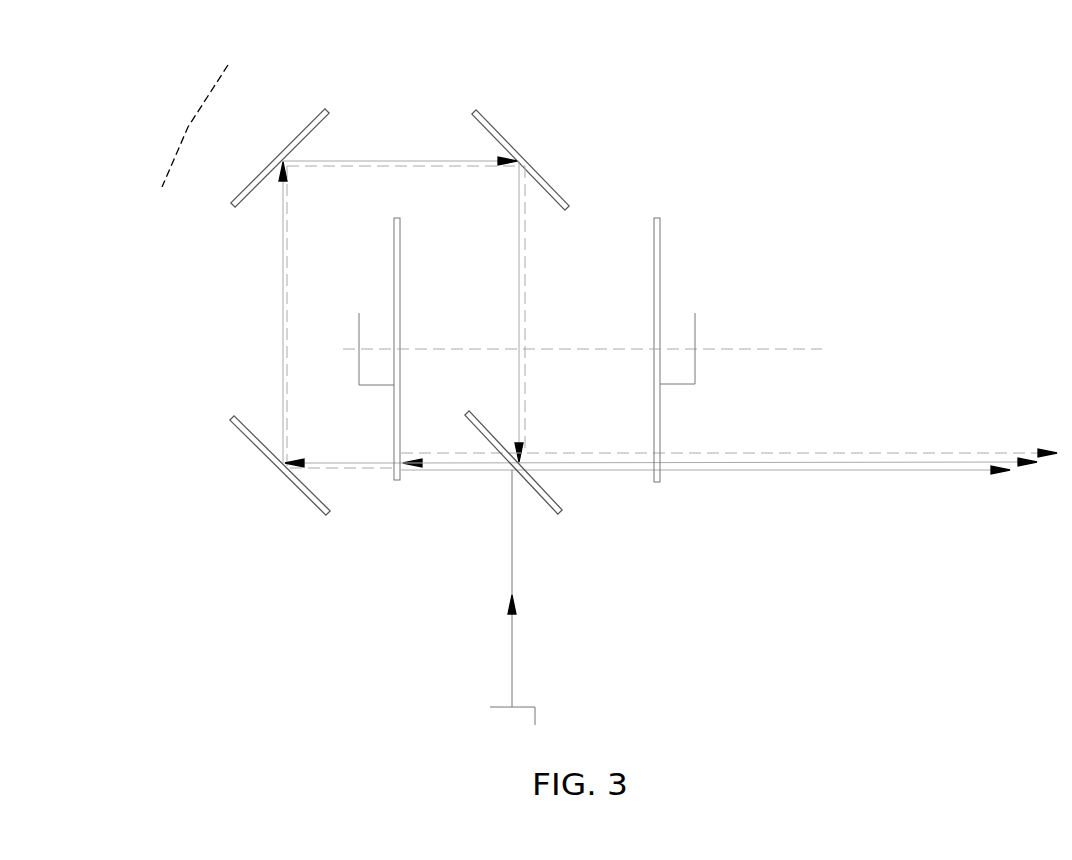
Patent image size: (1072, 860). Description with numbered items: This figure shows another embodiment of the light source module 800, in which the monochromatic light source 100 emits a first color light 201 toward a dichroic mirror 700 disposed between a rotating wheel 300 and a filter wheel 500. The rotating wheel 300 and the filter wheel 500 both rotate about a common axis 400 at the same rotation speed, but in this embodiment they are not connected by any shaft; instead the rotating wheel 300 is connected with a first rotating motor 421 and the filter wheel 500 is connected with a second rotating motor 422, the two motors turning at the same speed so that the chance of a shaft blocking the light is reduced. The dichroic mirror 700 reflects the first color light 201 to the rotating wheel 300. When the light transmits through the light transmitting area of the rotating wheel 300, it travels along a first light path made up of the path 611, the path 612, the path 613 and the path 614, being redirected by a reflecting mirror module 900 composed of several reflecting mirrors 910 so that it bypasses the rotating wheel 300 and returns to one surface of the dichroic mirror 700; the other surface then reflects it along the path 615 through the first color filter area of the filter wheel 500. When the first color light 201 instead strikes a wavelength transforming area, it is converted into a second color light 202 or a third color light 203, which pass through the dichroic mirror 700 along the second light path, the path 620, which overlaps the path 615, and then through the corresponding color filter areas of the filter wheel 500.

The light source module 800 is at (85, 52).
The reflecting mirror module 900 is at (190, 128).
The reflecting mirror 910 is at (488, 128).
The path 613 is at (344, 167).
The path 612 is at (288, 312).
The path 614 is at (528, 300).
The path 611 is at (340, 470).
The path 615 is at (783, 452).
The third color light 203 is at (880, 455).
The path 620 is at (782, 474).
The second color light 202 is at (877, 471).
The rotating wheel 300 is at (398, 482).
The filter wheel 500 is at (660, 482).
The axis 400 is at (740, 348).
The second rotating motor 422 is at (375, 383).
The first rotating motor 421 is at (683, 327).
The dichroic mirror 700 is at (552, 497).
The first color light 201 is at (512, 552).
The monochromatic light source 100 is at (490, 714).